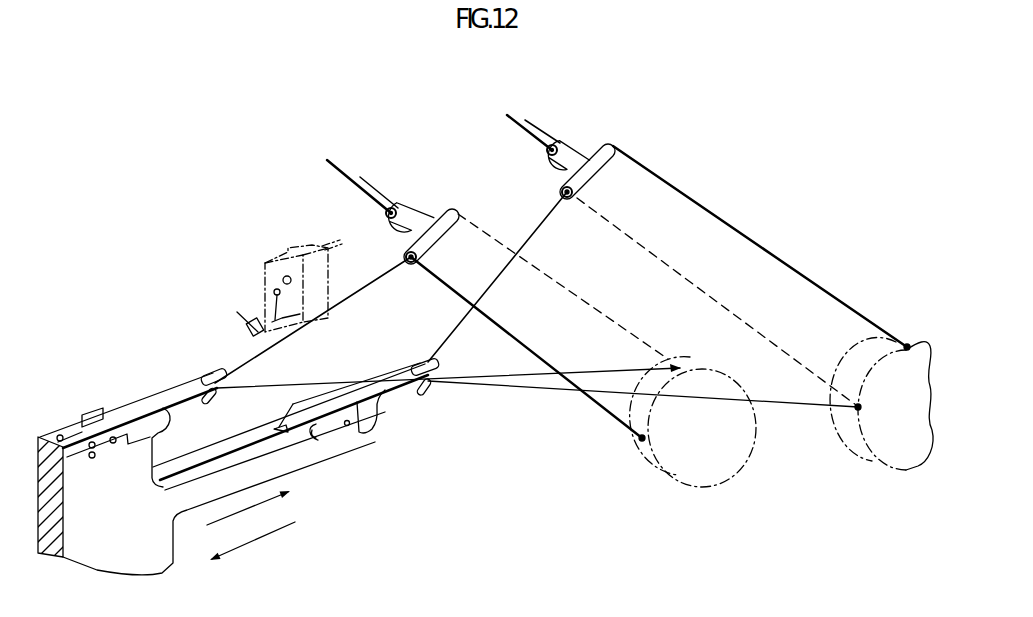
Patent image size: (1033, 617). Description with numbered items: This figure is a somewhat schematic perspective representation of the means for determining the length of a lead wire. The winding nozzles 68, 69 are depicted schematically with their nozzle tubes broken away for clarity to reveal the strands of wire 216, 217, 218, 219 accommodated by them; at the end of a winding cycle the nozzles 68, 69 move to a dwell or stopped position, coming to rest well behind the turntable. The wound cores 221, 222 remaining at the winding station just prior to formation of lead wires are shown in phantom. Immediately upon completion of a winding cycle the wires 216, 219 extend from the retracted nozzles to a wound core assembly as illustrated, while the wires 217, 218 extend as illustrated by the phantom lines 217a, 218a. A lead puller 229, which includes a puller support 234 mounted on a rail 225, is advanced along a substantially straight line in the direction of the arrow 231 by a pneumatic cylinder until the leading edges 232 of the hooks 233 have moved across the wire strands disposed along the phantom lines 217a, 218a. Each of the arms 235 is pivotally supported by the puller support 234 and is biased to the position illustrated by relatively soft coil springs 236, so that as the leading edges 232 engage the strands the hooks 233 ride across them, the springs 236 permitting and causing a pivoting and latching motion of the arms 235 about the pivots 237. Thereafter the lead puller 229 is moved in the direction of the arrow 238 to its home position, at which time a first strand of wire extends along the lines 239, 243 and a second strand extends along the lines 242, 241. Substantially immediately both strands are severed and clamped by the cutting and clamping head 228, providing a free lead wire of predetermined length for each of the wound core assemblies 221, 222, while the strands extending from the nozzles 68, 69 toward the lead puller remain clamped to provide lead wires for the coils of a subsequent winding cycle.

The winding nozzle 68 is at (440, 240).
The winding nozzle 69 is at (597, 172).
The strand of wire 216 is at (334, 176).
The strand of wire 217 is at (381, 189).
The phantom line of wire strand 217a is at (608, 311).
The strand of wire 218 is at (513, 129).
The phantom line of wire strand 218a is at (658, 253).
The strand of wire 219 is at (543, 128).
The wound core 221 is at (651, 473).
The wound core 222 is at (873, 470).
The rail 225 is at (150, 397).
The cutting and clamping head 228 is at (262, 265).
The lead puller 229 is at (122, 578).
The arrow 231 is at (248, 510).
The leading edge 232 is at (230, 388).
The hook 233 is at (207, 370).
The puller support 234 is at (202, 499).
The arm 235 is at (376, 408).
The coil spring 236 is at (93, 460).
The pivot 237 is at (349, 426).
The arrow 238 is at (252, 544).
The line 239 is at (383, 269).
The line 241 is at (791, 405).
The line 242 is at (540, 235).
The line 243 is at (597, 367).